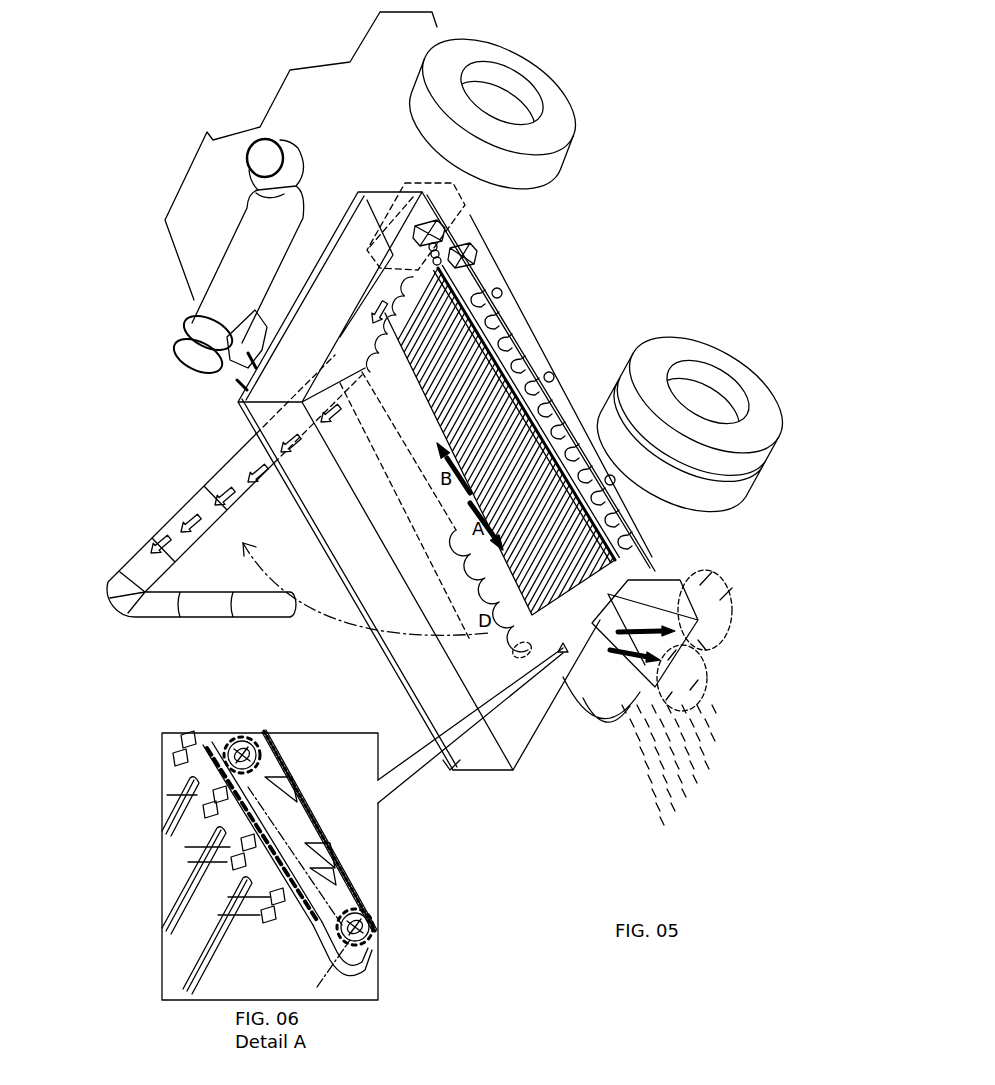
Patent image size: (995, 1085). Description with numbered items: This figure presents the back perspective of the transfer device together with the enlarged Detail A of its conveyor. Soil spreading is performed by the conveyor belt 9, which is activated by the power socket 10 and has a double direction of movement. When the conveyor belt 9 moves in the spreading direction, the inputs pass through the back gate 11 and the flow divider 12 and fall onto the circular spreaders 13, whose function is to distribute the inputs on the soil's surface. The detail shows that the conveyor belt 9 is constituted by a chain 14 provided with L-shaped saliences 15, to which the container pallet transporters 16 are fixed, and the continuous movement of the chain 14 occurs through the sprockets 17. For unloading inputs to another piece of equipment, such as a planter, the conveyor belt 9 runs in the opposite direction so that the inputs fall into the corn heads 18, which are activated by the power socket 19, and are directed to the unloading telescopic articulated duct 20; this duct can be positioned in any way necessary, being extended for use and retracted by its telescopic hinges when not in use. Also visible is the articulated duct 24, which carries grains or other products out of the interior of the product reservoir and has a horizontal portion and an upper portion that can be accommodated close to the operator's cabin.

In FIG. 05, the conveyor belt 9 is at (477, 347).
In FIG. 05, the power socket 10 is at (473, 257).
In FIG. 05, the back gate 11 is at (567, 650).
In FIG. 05, the flow divider 12 is at (658, 687).
In FIG. 05, the circular spreaders 13 is at (717, 608).
In FIG. 06, the chain 14 is at (363, 967).
In FIG. 06, the L-shaped salience 15 is at (207, 810).
In FIG. 06, the container pallet transporters 16 is at (190, 983).
In FIG. 06, the sprockets 17 is at (443, 928).
In FIG. 05, the corn heads 18 is at (372, 353).
In FIG. 05, the power socket 19 is at (440, 223).
In FIG. 05, the unloading telescopic articulated duct 20 is at (150, 549).
In FIG. 05, the articulated duct 24 is at (230, 280).